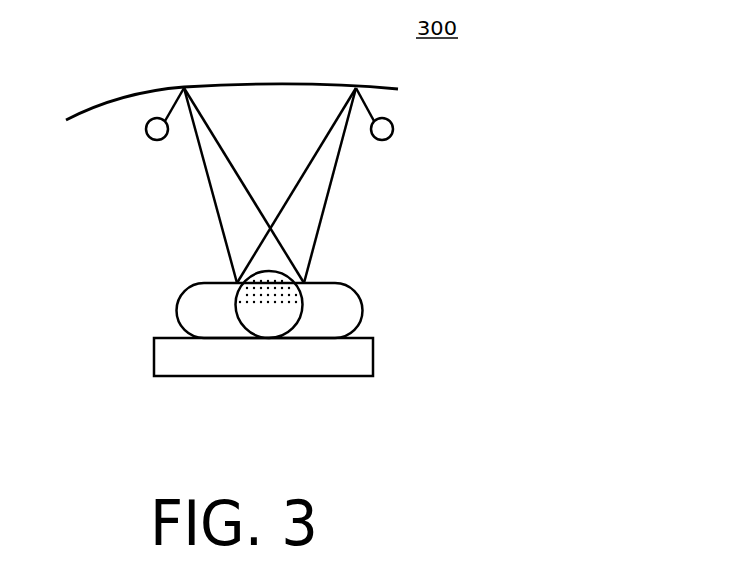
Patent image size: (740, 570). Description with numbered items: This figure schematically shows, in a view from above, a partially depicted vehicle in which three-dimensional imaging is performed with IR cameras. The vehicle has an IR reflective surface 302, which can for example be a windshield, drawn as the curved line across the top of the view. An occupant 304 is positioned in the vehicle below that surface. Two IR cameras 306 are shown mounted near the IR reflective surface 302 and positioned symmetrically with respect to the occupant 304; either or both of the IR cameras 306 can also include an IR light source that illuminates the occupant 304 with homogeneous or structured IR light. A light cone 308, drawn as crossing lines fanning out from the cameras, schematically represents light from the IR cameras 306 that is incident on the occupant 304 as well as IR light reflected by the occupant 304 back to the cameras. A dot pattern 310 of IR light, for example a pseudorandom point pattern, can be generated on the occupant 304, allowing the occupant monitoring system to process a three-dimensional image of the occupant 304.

The IR reflective surface 302 is at (292, 84).
The occupant 304 is at (176, 303).
The IR cameras 306 is at (147, 136).
The light cone 308 is at (206, 183).
The dot pattern 310 is at (250, 297).